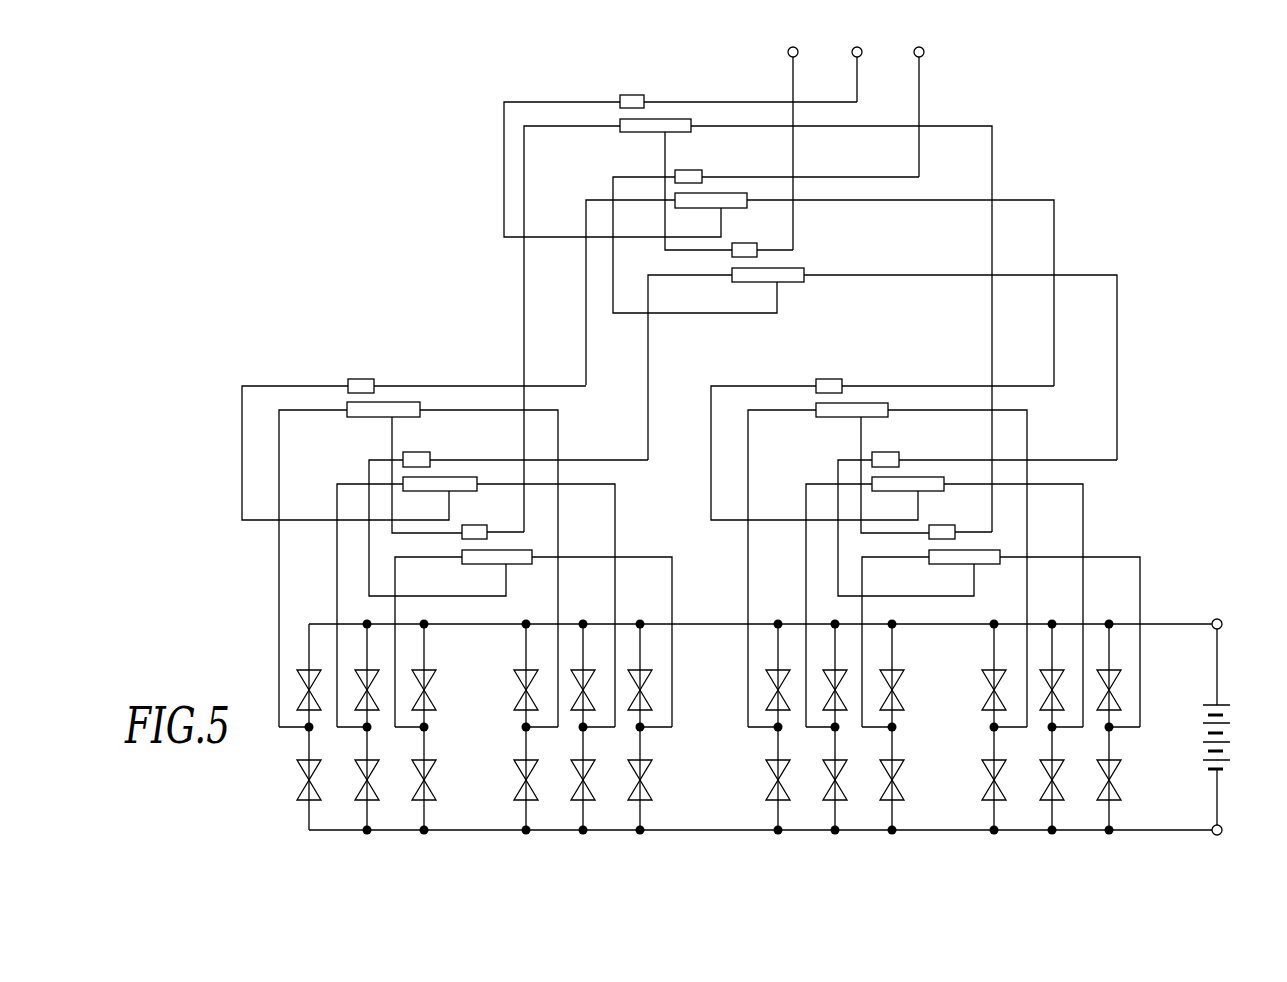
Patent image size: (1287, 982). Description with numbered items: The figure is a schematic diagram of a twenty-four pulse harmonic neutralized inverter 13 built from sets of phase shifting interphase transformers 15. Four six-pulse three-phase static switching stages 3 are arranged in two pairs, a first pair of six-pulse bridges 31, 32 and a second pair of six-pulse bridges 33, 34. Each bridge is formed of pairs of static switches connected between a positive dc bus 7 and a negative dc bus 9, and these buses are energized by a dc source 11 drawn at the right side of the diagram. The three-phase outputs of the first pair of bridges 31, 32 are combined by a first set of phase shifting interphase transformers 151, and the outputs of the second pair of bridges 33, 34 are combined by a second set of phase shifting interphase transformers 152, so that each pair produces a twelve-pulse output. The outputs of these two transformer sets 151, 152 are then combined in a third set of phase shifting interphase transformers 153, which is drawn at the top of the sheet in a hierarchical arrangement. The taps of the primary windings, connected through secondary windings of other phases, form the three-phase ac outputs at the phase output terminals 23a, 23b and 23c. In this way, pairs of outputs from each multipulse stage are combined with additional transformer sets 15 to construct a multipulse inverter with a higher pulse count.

The 24 pulse harmonic neutralized inverter 13 is at (1192, 410).
The six-pulse three-phase static switching stage 3 is at (709, 771).
The six-pulse bridge 31 is at (344, 841).
The six-pulse bridge 32 is at (560, 845).
The six-pulse bridge 33 is at (813, 840).
The six-pulse bridge 34 is at (1027, 845).
The positive dc bus 7 is at (1173, 624).
The negative dc bus 9 is at (1175, 830).
The dc source 11 is at (1225, 733).
The phase shifting interphase transformer 15 is at (691, 374).
The set of phase shifting interphase transformers 151 is at (356, 368).
The set of phase shifting interphase transformers 152 is at (896, 371).
The set of phase shifting interphase transformers 153 is at (637, 91).
The phase output 23a is at (787, 53).
The phase output 23b is at (863, 52).
The phase output 23c is at (925, 52).